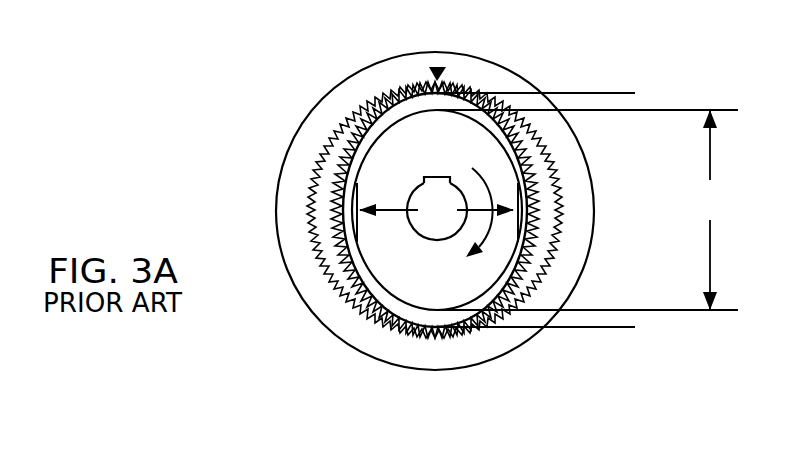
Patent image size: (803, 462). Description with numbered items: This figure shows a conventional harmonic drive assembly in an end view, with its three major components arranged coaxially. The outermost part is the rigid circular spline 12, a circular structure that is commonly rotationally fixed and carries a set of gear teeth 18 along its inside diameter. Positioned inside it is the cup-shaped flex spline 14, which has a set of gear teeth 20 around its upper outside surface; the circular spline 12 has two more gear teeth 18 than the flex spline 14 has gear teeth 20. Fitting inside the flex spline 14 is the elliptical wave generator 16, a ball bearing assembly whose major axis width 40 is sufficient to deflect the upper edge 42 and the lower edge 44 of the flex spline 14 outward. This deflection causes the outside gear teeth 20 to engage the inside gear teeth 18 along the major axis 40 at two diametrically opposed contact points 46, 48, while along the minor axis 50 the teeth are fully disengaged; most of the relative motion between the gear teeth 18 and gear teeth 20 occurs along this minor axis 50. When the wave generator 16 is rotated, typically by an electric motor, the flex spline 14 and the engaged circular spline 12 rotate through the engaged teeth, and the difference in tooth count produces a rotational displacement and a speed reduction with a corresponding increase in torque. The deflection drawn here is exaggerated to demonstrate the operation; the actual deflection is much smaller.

The circular spline 12 is at (530, 75).
The flex spline 14 is at (333, 200).
The wave generator 16 is at (439, 161).
The gear teeth 18 is at (315, 173).
The gear teeth 20 is at (347, 143).
The major axis width 40 is at (587, 210).
The upper edge 42 is at (555, 94).
The lower edge 44 is at (555, 329).
The contact point 46 is at (437, 85).
The contact point 48 is at (438, 333).
The minor axis 50 is at (437, 209).